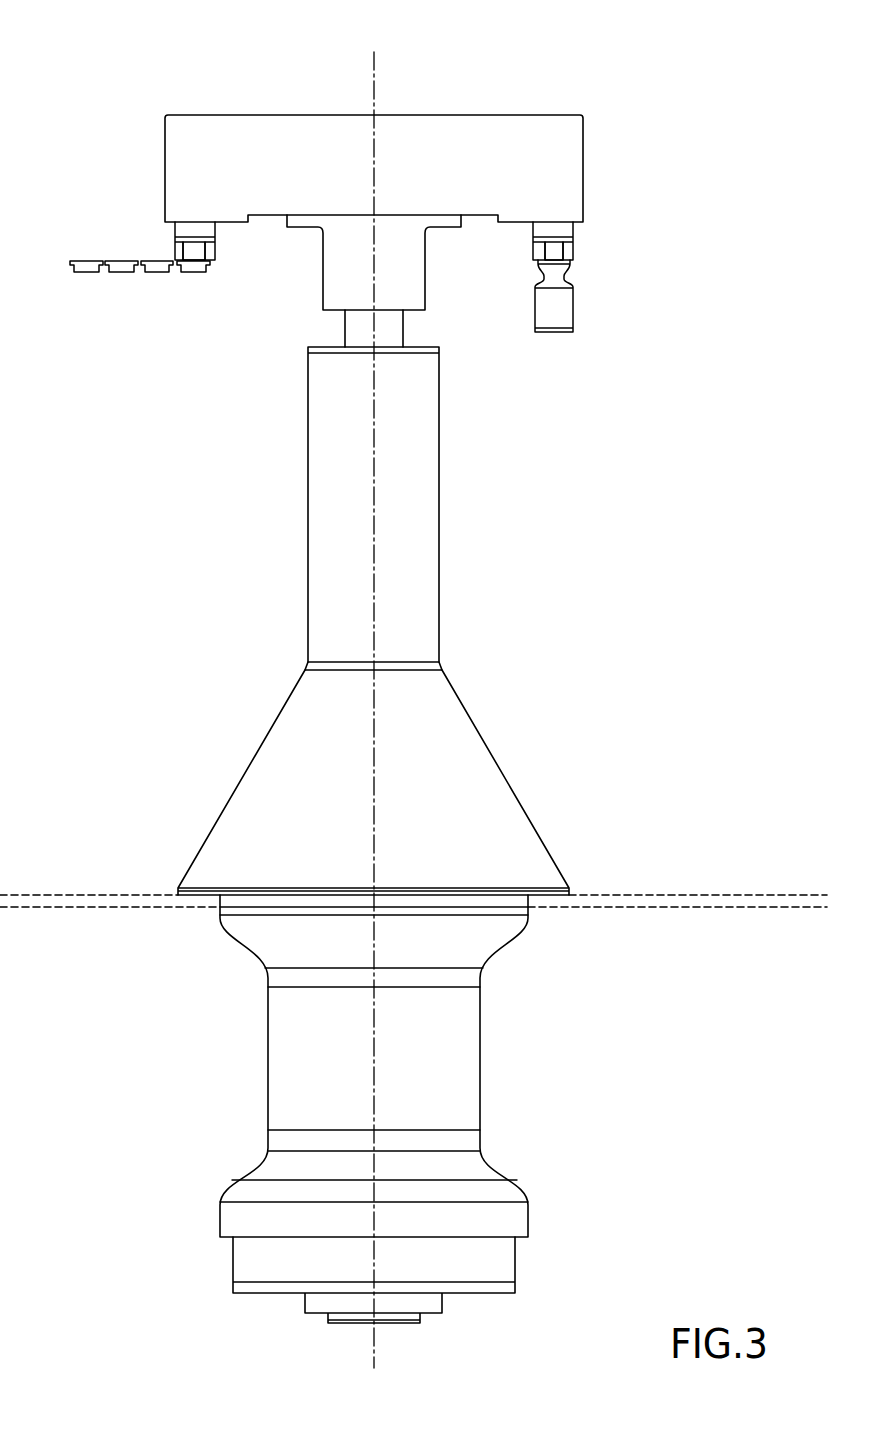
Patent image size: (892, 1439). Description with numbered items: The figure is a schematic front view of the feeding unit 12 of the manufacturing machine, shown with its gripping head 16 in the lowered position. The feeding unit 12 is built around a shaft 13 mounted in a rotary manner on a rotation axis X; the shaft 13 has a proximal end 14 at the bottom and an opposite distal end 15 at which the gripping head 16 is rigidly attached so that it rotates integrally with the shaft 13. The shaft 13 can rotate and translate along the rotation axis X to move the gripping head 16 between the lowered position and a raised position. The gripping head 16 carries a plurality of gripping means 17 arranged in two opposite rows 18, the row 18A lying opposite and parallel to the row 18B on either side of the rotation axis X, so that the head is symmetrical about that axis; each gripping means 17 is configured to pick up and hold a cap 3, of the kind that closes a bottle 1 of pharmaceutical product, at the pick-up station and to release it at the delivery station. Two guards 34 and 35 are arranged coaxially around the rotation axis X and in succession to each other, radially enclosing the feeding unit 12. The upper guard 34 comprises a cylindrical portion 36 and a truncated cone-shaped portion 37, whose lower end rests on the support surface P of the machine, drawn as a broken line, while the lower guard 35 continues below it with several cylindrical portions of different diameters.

The feeding unit 12 is at (100, 106).
The gripping head 16 is at (203, 137).
The rotation axis X is at (375, 78).
The gripping means 17 is at (180, 230).
The distal end 15 is at (437, 261).
The shaft 13 is at (393, 330).
The rows 18 is at (444, 285).
The row 18A is at (222, 245).
The row 18B is at (590, 244).
The cap 3 is at (87, 270).
The bottle 1 is at (558, 322).
The guard 34 is at (410, 572).
The cylindrical portion 36 is at (430, 633).
The truncated cone-shaped portion 37 is at (490, 780).
The support surface P is at (748, 895).
The guard 35 is at (440, 1053).
The proximal end 14 is at (401, 1330).